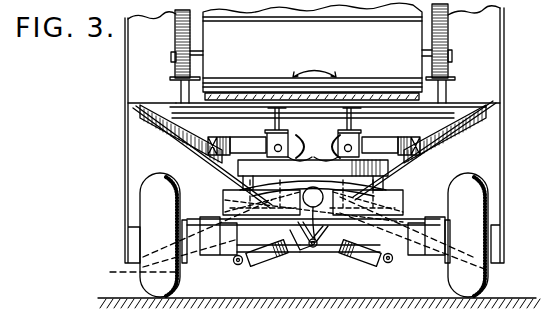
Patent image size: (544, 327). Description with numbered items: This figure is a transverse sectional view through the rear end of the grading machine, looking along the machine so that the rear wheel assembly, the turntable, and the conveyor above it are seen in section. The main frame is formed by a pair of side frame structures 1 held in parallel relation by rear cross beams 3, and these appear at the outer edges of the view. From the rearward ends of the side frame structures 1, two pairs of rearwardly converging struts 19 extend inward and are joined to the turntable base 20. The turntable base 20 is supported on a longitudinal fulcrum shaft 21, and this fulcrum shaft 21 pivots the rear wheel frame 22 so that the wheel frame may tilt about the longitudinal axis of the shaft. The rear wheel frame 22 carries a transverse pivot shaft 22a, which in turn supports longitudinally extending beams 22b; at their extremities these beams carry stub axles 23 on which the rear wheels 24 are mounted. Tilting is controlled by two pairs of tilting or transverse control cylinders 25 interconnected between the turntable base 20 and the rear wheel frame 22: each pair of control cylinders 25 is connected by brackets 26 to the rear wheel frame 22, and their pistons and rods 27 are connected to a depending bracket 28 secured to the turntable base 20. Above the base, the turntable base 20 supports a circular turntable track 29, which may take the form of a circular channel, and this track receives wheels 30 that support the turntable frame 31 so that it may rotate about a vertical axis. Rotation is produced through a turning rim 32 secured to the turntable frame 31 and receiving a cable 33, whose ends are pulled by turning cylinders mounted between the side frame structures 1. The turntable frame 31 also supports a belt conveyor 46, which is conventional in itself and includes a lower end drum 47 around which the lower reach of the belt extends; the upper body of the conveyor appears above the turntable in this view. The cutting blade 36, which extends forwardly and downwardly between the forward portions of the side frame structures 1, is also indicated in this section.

The side frame structure 1 is at (125, 155).
The rear cross beam 3 is at (132, 121).
The rearwardly converging strut 19 is at (184, 141).
The turntable base 20 is at (240, 178).
The longitudinal fulcrum shaft 21 is at (326, 258).
The rear wheel frame 22 is at (220, 204).
The transverse pivot shaft 22a is at (343, 262).
The longitudinally extending beam 22b is at (213, 249).
The stub axle 23 is at (193, 233).
The rear wheel 24 is at (150, 195).
The tilting or transverse control cylinder 25 is at (280, 263).
The bracket 26 is at (243, 264).
The piston and rod 27 is at (288, 244).
The depending bracket 28 is at (309, 256).
The circular turntable track 29 is at (362, 140).
The wheel 30 is at (318, 137).
The turntable frame 31 is at (182, 103).
The turning rim 32 is at (243, 120).
The cable 33 is at (498, 103).
The cutting blade 36 is at (219, 96).
The belt conveyor 46 is at (455, 36).
The lower end drum 47 is at (312, 47).